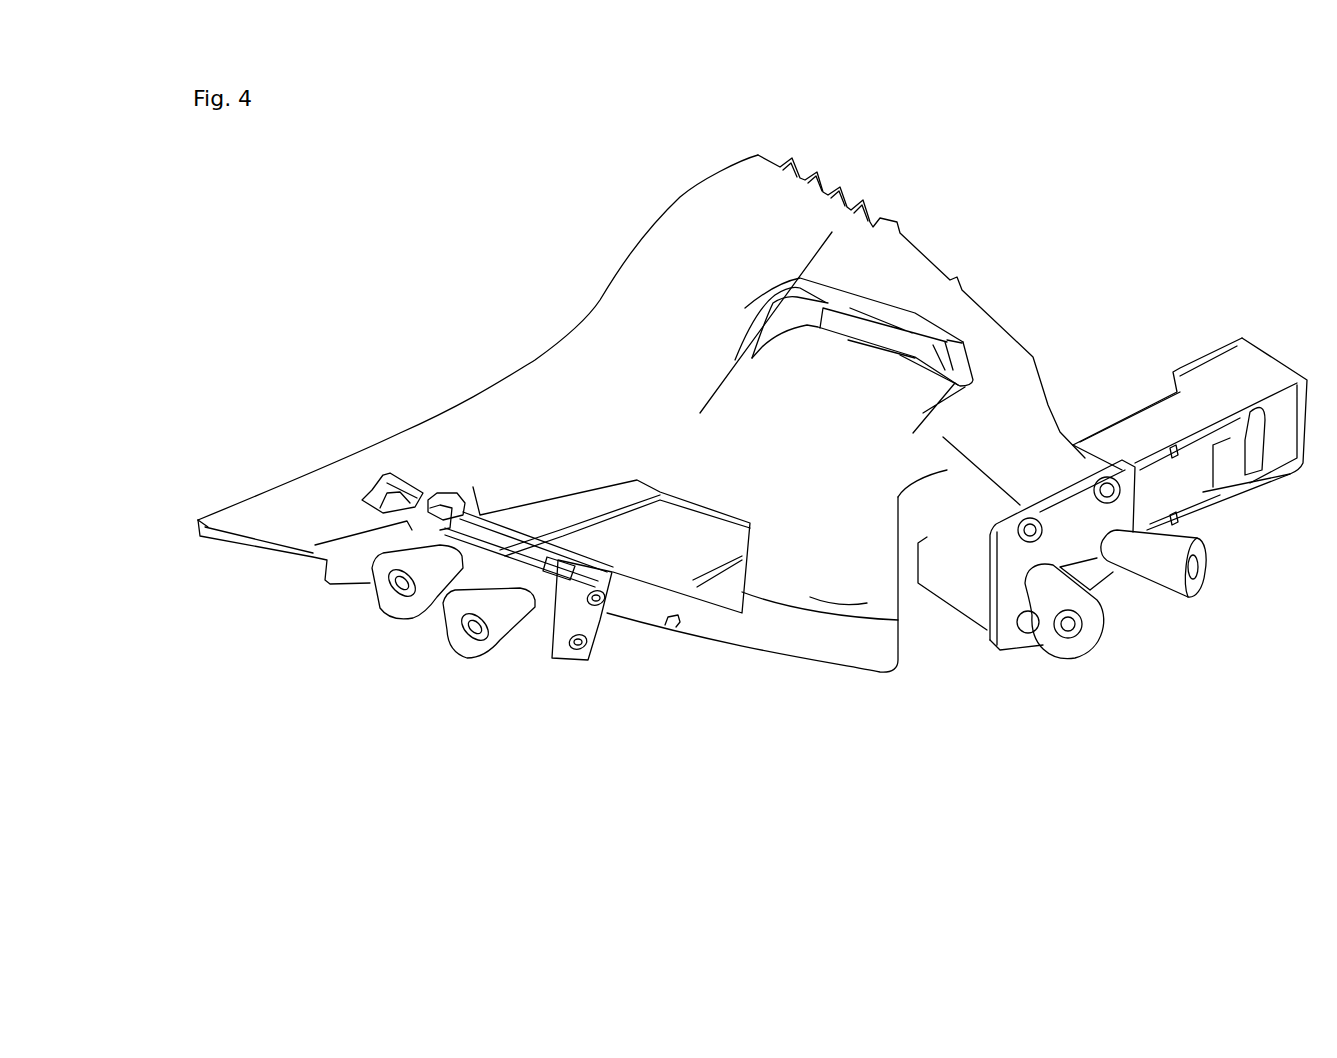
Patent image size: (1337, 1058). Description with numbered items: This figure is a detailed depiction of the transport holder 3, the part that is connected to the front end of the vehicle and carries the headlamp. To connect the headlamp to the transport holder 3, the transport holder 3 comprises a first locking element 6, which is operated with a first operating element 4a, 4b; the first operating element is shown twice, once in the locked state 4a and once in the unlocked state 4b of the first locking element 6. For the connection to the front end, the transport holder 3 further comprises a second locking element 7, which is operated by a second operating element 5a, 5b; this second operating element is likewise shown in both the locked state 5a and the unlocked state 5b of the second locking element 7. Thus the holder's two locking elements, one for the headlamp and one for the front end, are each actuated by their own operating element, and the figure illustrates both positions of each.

The transport holder 3 is at (935, 192).
The first operating element (locked state) 4a is at (380, 610).
The first operating element (unlocked state) 4b is at (453, 647).
The second operating element (locked state) 5a is at (1066, 655).
The second operating element (unlocked state) 5b is at (1193, 600).
The first locking element 6 is at (472, 510).
The second locking element 7 is at (1225, 490).